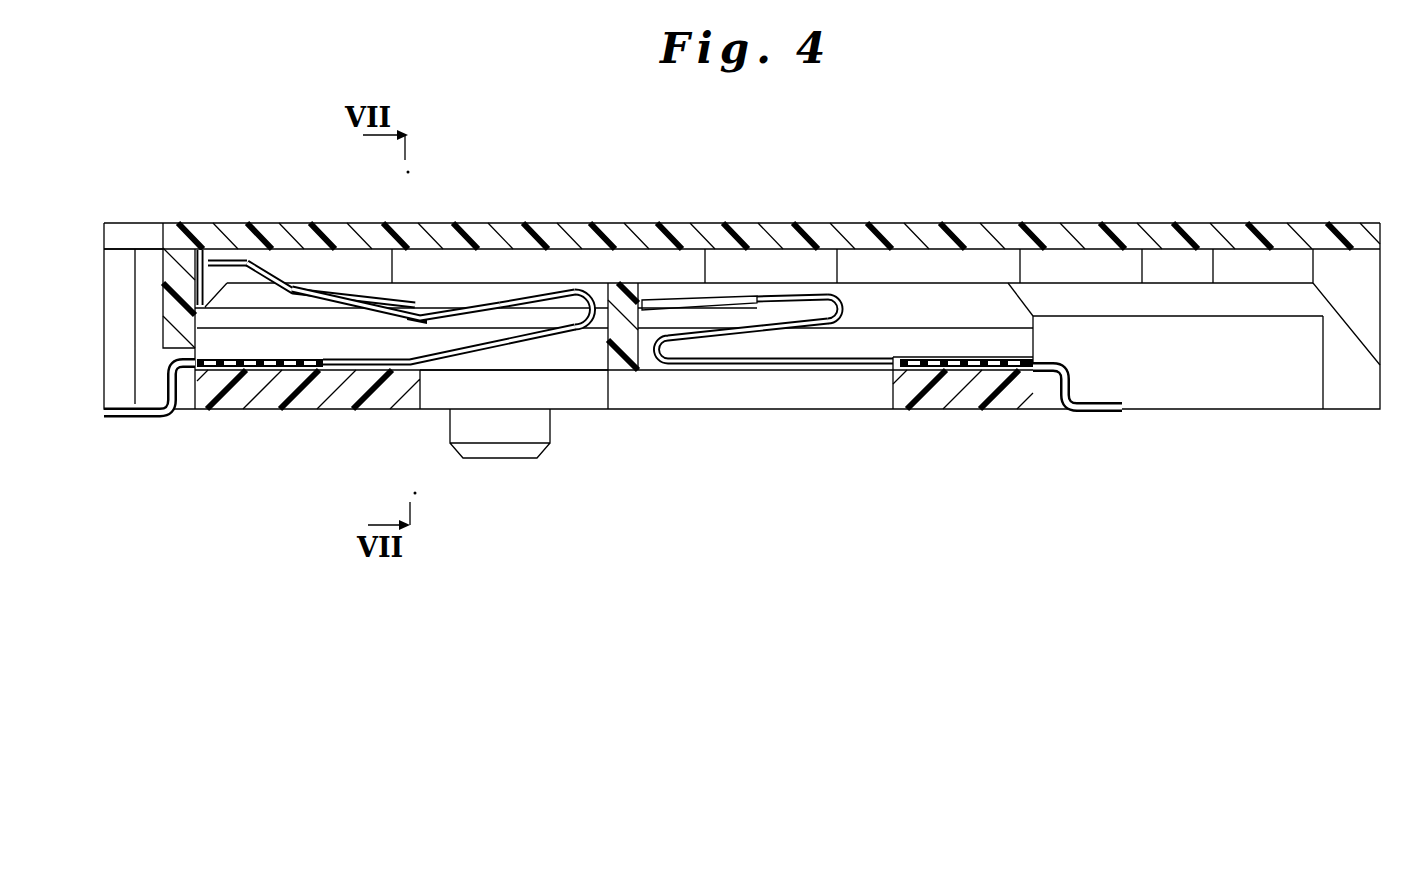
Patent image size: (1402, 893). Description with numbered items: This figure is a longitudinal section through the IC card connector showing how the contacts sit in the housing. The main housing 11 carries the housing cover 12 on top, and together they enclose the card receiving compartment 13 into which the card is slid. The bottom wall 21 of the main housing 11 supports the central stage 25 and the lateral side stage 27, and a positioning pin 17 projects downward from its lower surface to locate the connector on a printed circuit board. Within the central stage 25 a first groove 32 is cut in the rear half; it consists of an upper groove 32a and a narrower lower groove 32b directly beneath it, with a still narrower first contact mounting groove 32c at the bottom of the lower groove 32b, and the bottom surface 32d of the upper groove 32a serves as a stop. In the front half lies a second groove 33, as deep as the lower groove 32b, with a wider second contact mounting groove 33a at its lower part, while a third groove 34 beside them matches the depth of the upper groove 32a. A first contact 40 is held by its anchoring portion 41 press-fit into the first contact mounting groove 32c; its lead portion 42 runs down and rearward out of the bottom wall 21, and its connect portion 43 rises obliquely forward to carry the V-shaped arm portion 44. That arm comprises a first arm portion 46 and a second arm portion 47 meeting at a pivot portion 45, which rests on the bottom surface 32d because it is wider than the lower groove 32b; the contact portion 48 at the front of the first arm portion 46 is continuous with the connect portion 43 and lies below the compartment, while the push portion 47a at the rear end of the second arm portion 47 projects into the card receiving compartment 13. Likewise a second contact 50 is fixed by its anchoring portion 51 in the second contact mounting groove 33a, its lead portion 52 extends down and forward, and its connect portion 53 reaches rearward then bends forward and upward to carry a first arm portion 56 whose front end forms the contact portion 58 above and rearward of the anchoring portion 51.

The main housing 11 is at (1243, 415).
The housing cover 12 is at (1184, 220).
The card receiving compartment 13 is at (555, 258).
The positioning pin 17 is at (517, 460).
The bottom wall 21 is at (1297, 400).
The central stage 25 is at (955, 290).
The lateral side stage 27 is at (1273, 283).
The first groove 32 is at (415, 452).
The upper groove 32a is at (212, 375).
The lower groove 32b is at (247, 372).
The first contact mounting groove 32c is at (283, 372).
The bottom surface of the upper groove 32d is at (323, 372).
The second groove 33 is at (1040, 338).
The second contact mounting groove 33a is at (917, 358).
The third groove 34 is at (980, 307).
The first contact 40 is at (115, 418).
The anchoring portion 41 is at (312, 357).
The lead portion 42 is at (148, 418).
The connect portion 43 is at (545, 340).
The V-shaped arm portion 44 is at (478, 290).
The pivot portion 45 is at (449, 344).
The first arm portion 46 is at (518, 296).
The second arm portion 47 is at (305, 290).
The push portion 47a is at (222, 258).
The contact portion 48 is at (592, 287).
The second contact 50 is at (1110, 418).
The anchoring portion 51 is at (975, 385).
The lead portion 52 is at (1095, 413).
The connect portion 53 is at (737, 340).
The first arm portion 56 is at (733, 298).
The contact portion 58 is at (826, 292).